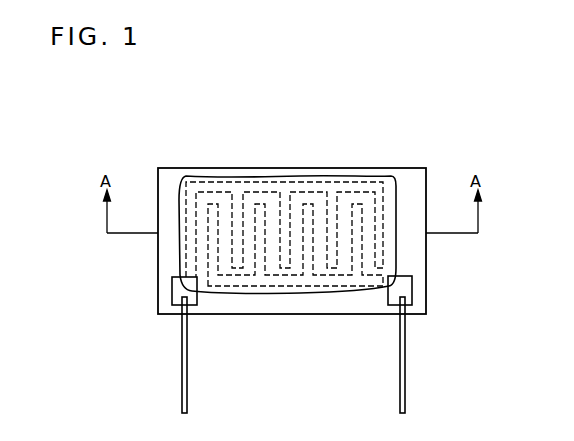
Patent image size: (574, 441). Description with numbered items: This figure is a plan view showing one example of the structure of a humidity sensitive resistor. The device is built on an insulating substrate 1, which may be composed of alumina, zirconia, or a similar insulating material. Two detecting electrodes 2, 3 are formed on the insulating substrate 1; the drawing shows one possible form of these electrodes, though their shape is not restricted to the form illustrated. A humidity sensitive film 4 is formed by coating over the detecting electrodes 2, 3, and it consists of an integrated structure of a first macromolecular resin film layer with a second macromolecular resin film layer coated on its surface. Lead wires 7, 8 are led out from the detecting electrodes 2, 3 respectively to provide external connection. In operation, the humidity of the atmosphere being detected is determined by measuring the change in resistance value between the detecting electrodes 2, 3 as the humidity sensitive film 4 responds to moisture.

The insulating substrate 1 is at (430, 288).
The detecting electrode 2 is at (218, 187).
The detecting electrode 3 is at (315, 207).
The humidity sensitive film 4 is at (362, 177).
The lead wire 7 is at (188, 379).
The lead wire 8 is at (397, 383).